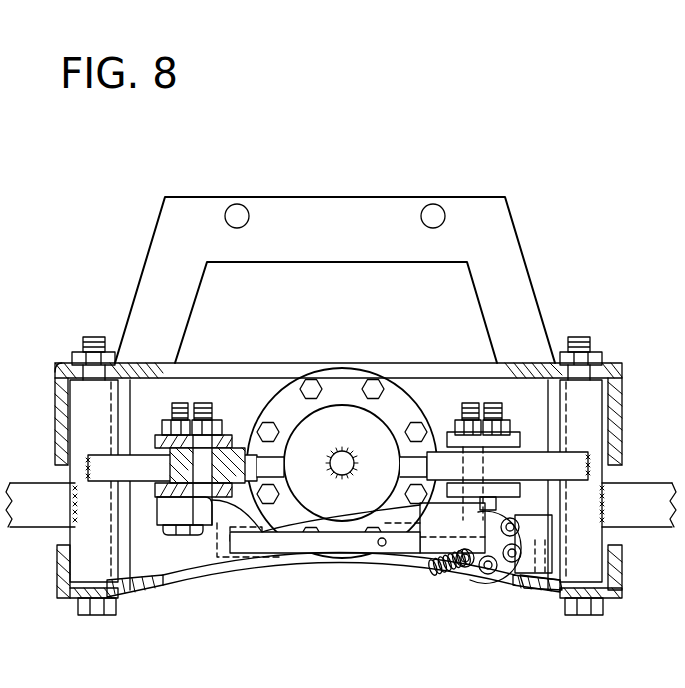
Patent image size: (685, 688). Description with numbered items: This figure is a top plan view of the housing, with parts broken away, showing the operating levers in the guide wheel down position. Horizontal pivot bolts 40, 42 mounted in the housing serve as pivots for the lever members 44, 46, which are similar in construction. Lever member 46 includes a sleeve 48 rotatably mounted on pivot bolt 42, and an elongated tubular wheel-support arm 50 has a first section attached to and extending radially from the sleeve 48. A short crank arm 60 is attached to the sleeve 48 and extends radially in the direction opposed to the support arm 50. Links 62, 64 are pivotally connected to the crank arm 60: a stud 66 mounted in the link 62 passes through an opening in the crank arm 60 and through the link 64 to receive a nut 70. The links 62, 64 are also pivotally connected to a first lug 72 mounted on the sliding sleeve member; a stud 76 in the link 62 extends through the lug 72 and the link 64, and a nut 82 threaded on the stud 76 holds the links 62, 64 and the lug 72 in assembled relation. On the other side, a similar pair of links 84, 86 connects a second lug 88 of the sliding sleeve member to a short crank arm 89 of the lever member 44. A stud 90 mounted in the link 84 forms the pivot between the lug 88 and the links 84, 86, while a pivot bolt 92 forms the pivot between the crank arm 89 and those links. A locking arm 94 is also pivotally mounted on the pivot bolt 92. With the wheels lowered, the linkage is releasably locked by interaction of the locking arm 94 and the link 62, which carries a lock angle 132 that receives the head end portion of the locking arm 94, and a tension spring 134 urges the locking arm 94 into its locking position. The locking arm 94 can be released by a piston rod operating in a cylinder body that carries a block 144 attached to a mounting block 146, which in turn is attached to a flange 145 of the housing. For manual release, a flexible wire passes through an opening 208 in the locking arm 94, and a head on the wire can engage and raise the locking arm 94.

The horizontal pivot bolt 40 is at (100, 337).
The horizontal pivot bolt 42 is at (585, 343).
The lever member 44 is at (43, 531).
The lever member 46 is at (664, 529).
The sleeve 48 is at (585, 428).
The wheel-support arm 50 is at (627, 497).
The short crank arm 60 is at (548, 460).
The link 62 is at (512, 490).
The link 64 is at (450, 467).
The stud 66 is at (473, 425).
The nut 70 is at (512, 425).
The first lug 72 is at (386, 385).
The stud 76 is at (476, 405).
The nut 82 is at (463, 420).
The link 84 is at (160, 493).
The link 86 is at (165, 442).
The second lug 88 is at (248, 460).
The short crank arm 89 is at (130, 541).
The stud 90 is at (207, 403).
The pivot bolt 92 is at (180, 403).
The locking arm 94 is at (326, 545).
The lock angle 132 is at (490, 506).
The tension spring 134 is at (452, 574).
The block 144 is at (540, 532).
The flange 145 is at (518, 583).
The mounting block 146 is at (548, 588).
The opening 208 is at (382, 548).